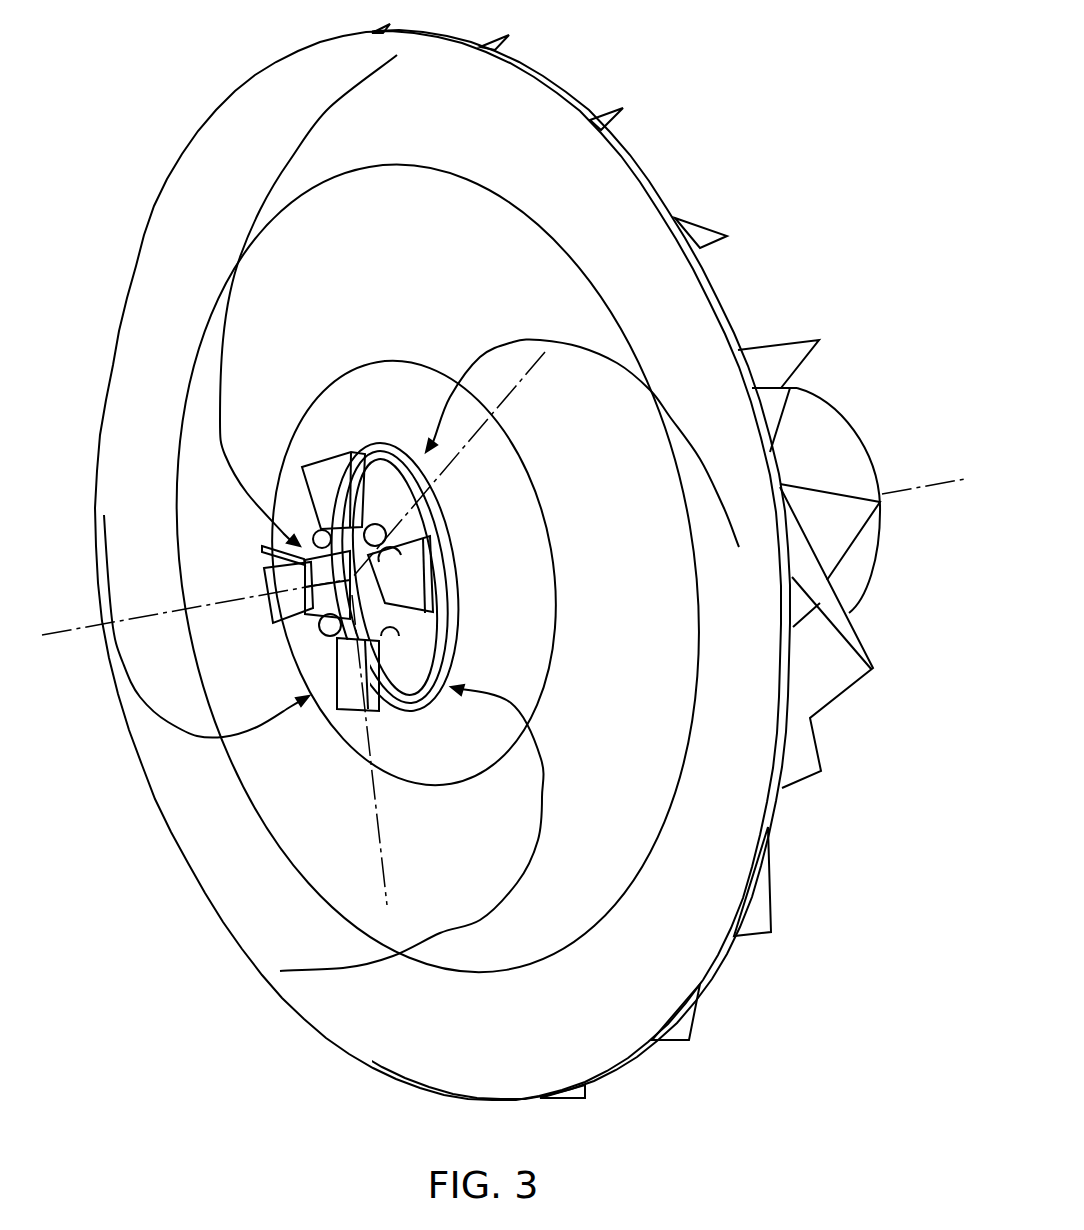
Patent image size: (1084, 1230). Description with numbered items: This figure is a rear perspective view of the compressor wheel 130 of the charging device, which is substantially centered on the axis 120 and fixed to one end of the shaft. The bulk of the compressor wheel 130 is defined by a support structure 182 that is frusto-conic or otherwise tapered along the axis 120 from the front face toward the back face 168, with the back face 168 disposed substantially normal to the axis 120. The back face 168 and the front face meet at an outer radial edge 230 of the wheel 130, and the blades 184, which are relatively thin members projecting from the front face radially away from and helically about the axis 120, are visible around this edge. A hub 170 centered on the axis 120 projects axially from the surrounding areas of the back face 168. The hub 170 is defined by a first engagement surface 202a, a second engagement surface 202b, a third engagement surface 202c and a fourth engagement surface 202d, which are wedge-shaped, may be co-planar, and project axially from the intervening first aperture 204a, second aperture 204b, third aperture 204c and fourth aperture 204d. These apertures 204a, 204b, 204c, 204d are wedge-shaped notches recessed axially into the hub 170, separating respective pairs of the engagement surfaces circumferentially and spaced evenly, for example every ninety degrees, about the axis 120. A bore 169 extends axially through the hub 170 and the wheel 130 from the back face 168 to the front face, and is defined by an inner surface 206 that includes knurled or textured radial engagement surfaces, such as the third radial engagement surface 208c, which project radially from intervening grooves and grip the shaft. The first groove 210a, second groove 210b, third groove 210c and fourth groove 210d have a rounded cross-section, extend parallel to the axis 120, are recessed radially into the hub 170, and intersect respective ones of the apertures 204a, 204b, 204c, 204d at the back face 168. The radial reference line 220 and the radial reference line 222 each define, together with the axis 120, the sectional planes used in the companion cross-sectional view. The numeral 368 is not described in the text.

The axis 120 is at (912, 483).
The compressor wheel 130 is at (720, 139).
The back face 168 is at (294, 817).
The bore 169 is at (320, 600).
The hub 170 is at (445, 548).
The support structure 182 is at (512, 941).
The blades 184 is at (843, 681).
The first engagement surface 202a is at (330, 470).
The second engagement surface 202b is at (412, 587).
The third engagement surface 202c is at (372, 704).
The fourth engagement surface 202d is at (273, 566).
The first aperture 204a is at (375, 480).
The second aperture 204b is at (410, 665).
The third aperture 204c is at (306, 664).
The fourth aperture 204d is at (300, 503).
The inner surface 206 is at (322, 590).
The third radial engagement surface 208c is at (355, 535).
The first groove 210a is at (370, 553).
The second groove 210b is at (400, 635).
The third groove 210c is at (325, 630).
The fourth groove 210d is at (305, 548).
The radial reference line 220 is at (524, 378).
The radial reference line 222 is at (391, 858).
The outer radial edge 230 is at (546, 76).
The inner annular edge 368 is at (415, 187).